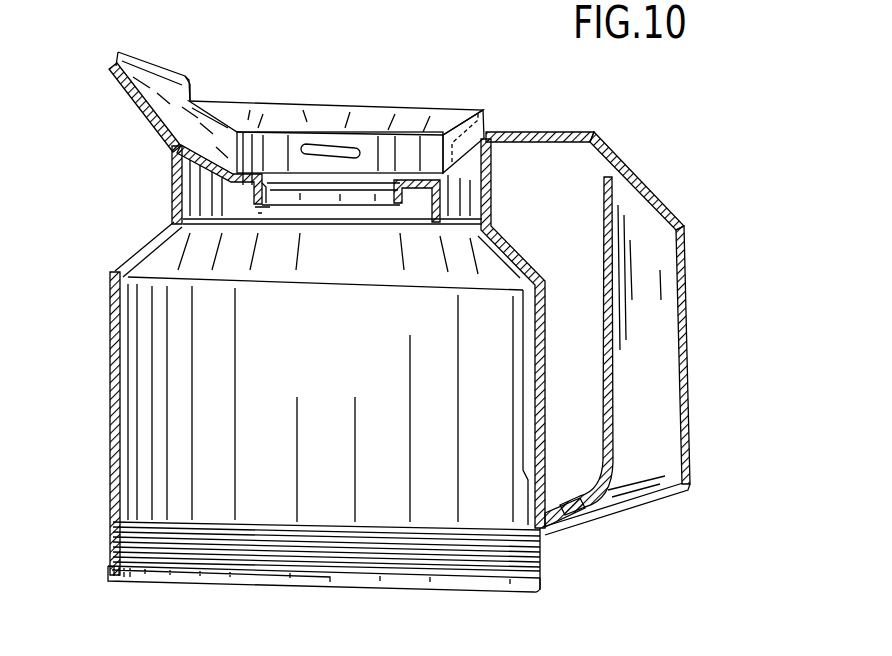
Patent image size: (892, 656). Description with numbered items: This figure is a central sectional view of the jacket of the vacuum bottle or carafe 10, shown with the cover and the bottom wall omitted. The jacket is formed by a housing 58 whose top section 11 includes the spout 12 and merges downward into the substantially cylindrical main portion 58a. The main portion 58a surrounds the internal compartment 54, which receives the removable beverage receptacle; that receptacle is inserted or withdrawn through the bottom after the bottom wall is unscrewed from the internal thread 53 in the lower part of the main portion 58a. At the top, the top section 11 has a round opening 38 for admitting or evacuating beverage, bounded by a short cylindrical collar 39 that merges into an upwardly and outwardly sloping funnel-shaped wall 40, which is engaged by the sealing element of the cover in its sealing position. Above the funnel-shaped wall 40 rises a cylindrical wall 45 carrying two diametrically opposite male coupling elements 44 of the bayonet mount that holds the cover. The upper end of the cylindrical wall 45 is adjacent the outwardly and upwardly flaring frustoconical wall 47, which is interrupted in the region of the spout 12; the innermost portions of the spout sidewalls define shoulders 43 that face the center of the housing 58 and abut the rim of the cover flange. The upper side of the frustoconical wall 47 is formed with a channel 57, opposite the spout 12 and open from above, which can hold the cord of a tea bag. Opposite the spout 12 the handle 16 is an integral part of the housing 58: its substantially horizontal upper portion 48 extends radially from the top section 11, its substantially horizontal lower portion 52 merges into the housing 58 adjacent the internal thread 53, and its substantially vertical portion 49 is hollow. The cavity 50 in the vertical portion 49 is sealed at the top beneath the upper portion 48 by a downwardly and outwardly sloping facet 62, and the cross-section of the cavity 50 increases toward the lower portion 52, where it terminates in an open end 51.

The vessel 10 is at (100, 366).
The top section 11 is at (172, 172).
The spout 12 is at (133, 112).
The handle 16 is at (690, 350).
The opening 38 is at (367, 193).
The cylindrical collar 39 is at (262, 188).
The funnel-shaped wall 40 is at (260, 177).
The shoulders 43 is at (196, 96).
The male coupling elements 44 is at (342, 147).
The cylindrical wall 45 is at (263, 180).
The frustoconical wall 47 is at (330, 118).
The upper portion of handle 48 is at (530, 132).
The vertical portion of handle 49 is at (683, 283).
The cavity 50 is at (660, 428).
The open end 51 is at (635, 504).
The lower portion of handle 52 is at (561, 500).
The internal thread 53 is at (466, 560).
The internal compartment 54 is at (372, 478).
The channel 57 is at (485, 112).
The housing 58 is at (112, 437).
The main portion of housing 58a is at (533, 402).
The facet 62 is at (614, 156).